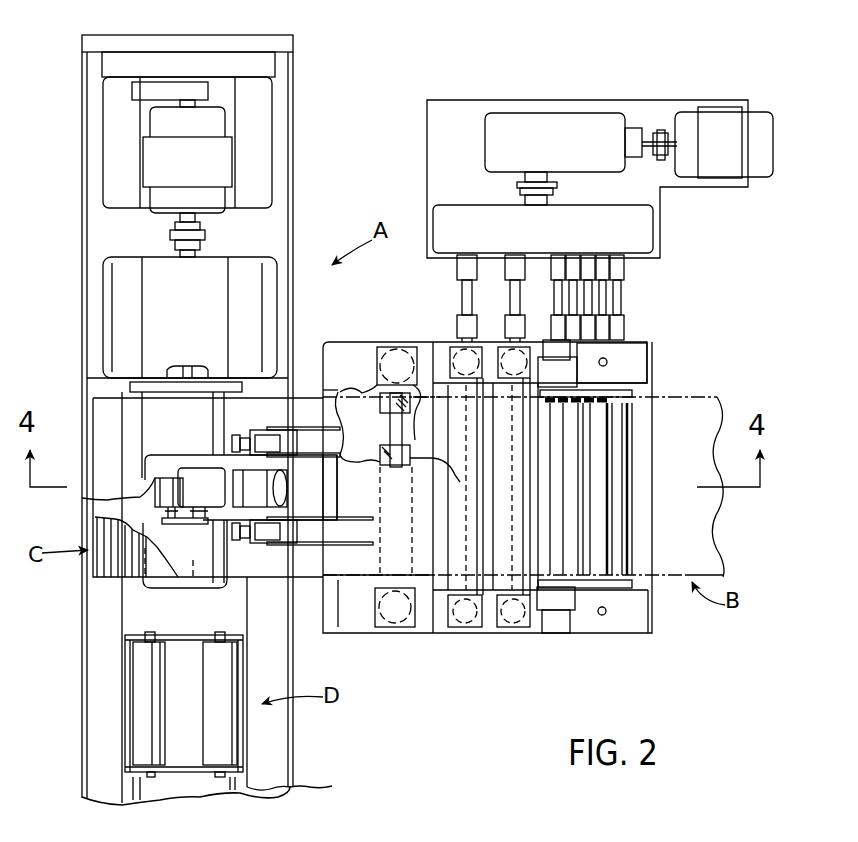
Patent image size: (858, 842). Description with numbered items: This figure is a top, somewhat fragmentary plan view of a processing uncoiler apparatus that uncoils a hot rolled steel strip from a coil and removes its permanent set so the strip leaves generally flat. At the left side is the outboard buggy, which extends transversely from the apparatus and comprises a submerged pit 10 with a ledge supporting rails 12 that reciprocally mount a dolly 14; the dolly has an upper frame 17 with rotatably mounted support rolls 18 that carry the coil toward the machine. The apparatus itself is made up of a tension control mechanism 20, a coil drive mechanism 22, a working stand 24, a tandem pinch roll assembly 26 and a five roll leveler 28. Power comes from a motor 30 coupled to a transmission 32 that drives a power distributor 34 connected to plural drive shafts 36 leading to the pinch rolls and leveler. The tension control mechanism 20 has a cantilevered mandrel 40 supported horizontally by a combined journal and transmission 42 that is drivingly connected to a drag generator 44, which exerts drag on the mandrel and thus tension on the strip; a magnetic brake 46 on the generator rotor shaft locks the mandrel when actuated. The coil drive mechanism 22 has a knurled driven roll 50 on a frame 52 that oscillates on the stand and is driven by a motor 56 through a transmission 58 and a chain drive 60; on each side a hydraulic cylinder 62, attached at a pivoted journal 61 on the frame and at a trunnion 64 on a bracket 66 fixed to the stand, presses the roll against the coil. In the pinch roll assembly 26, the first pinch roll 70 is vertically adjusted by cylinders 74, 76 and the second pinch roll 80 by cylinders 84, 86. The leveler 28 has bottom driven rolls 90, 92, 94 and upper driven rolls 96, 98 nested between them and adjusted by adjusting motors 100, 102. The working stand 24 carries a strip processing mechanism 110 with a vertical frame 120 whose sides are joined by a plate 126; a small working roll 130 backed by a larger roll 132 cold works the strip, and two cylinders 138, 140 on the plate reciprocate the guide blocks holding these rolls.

The submerged pit 10 is at (134, 622).
The rails 12 is at (250, 790).
The dolly 14 is at (251, 750).
The upper frame 17 is at (244, 770).
The support rolls 18 is at (238, 667).
The tension control mechanism 20 is at (284, 206).
The coil drive mechanism 22 is at (299, 419).
The working stand 24 is at (381, 338).
The tandem pinch roll assembly 26 is at (447, 335).
The five roll leveler 28 is at (621, 384).
The motor 30 is at (731, 108).
The transmission 32 is at (590, 115).
The power distributor 34 is at (653, 220).
The drive shafts 36 is at (636, 292).
The mandrel 40 is at (145, 585).
The combined journal and transmission 42 is at (220, 275).
The drag generator 44 is at (232, 164).
The magnetic brake 46 is at (208, 90).
The driven roll 50 is at (155, 494).
The frame 52 is at (162, 457).
The motor 56 is at (281, 478).
The transmission 58 is at (208, 466).
The chain drive 60 is at (190, 526).
The pivoted journal 61 is at (232, 432).
The hydraulic cylinder 62 is at (262, 432).
The trunnion 64 is at (266, 543).
The bracket 66 is at (337, 468).
The pinch roll 70 is at (450, 413).
The cylinder 74 is at (467, 620).
The cylinder 76 is at (474, 362).
The pinch roll 80 is at (505, 562).
The cylinder 84 is at (519, 620).
The cylinder 86 is at (523, 366).
The bottom driven roll 90 is at (561, 442).
The bottom driven roll 92 is at (591, 492).
The bottom driven roll 94 is at (628, 538).
The upper driven roll 96 is at (578, 462).
The upper driven roll 98 is at (604, 517).
The adjusting motor 100 is at (571, 604).
The adjusting motor 102 is at (572, 372).
The strip processing mechanism 110 is at (360, 418).
The vertical frame 120 is at (358, 338).
The plate 126 is at (355, 620).
The working roll 130 is at (392, 420).
The backup roll 132 is at (435, 477).
The cylinder 138 is at (388, 356).
The cylinder 140 is at (417, 620).